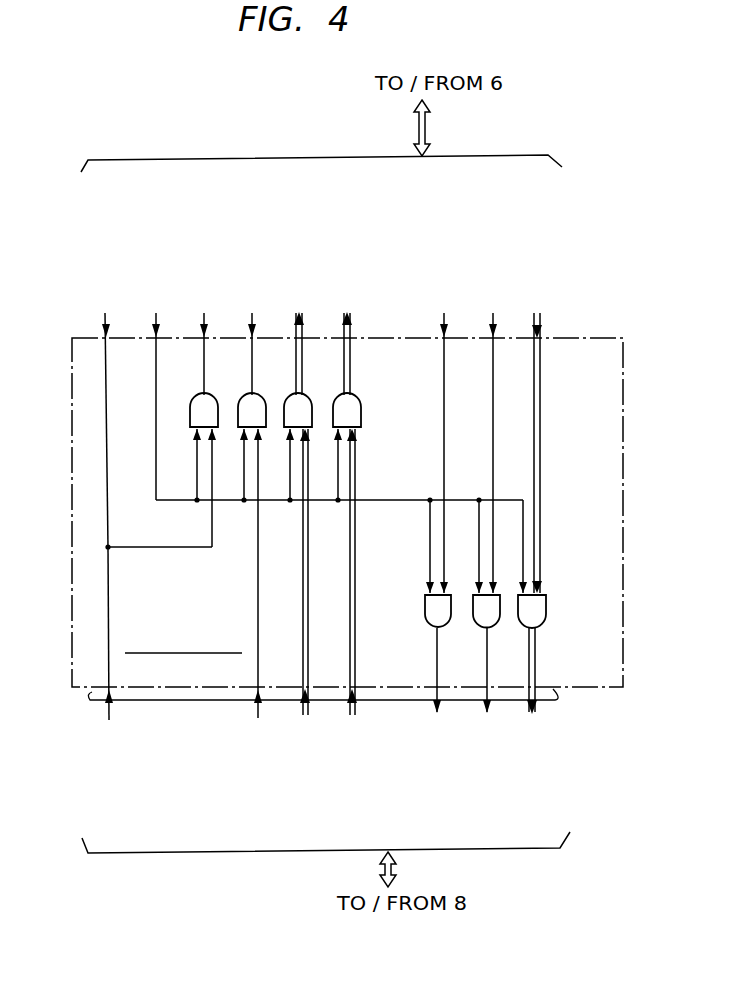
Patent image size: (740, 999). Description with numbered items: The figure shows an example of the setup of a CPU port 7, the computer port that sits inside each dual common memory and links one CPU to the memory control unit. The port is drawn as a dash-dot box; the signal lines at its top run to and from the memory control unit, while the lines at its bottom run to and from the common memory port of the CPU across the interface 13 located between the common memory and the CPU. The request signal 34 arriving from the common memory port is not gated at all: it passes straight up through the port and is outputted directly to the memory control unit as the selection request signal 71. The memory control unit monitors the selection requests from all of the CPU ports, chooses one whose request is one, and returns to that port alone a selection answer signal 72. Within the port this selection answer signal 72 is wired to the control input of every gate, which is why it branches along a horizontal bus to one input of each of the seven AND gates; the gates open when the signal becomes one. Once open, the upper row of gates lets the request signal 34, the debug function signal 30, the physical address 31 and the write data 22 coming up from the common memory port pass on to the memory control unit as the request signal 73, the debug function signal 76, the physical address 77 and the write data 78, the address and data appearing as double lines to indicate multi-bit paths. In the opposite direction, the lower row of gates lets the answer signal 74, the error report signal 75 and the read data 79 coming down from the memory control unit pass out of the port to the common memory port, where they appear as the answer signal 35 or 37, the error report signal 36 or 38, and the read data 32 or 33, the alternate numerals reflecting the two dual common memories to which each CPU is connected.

The CPU port 7 is at (72, 609).
The interface 13 is at (557, 701).
The write data 22 is at (349, 702).
The debug function signal 30 is at (252, 708).
The physical address 31 is at (304, 703).
The read data 32 is at (544, 699).
The read data 33 is at (523, 698).
The request signal 34 is at (108, 707).
The answer signal 35 is at (408, 706).
The error report signal 36 is at (472, 706).
The answer signal 37 is at (435, 695).
The error report signal 38 is at (480, 698).
The selection request signal 71 is at (108, 328).
The selection answer signal 72 is at (158, 328).
The request signal 73 is at (206, 328).
The answer signal 74 is at (446, 328).
The error report signal 75 is at (496, 328).
The debug function signal 76 is at (254, 328).
The physical address 77 is at (303, 327).
The write data 78 is at (355, 324).
The read data 79 is at (543, 325).